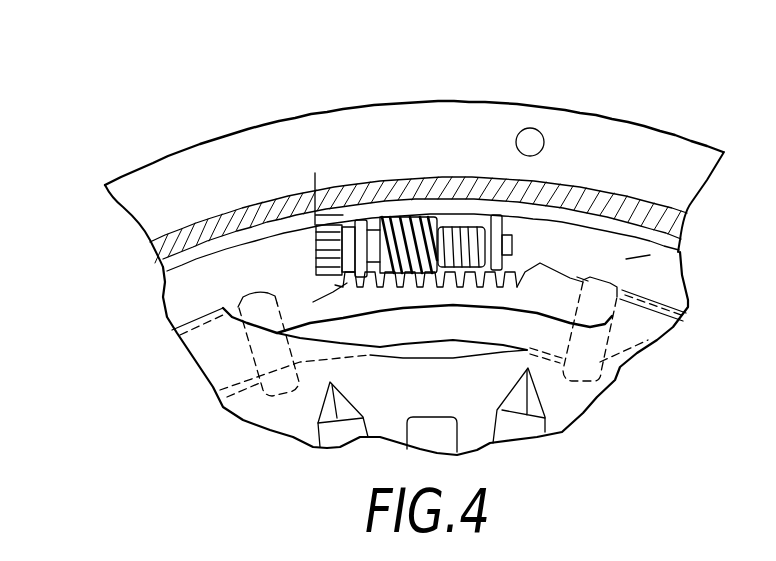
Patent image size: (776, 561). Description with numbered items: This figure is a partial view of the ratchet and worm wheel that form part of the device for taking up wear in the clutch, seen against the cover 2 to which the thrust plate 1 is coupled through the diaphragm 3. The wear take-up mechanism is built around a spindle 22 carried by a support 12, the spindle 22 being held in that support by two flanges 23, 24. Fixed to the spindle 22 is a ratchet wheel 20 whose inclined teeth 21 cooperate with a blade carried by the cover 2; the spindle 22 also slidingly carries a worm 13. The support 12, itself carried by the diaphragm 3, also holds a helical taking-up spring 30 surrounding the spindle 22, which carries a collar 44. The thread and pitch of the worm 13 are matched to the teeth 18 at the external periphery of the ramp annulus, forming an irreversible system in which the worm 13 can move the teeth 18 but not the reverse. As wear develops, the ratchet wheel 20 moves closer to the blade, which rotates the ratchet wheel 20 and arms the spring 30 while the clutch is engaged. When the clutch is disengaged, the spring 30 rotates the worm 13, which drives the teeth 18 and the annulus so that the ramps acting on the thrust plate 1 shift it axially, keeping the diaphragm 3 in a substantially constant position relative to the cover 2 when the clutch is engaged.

The thrust plate 1 is at (626, 259).
The cover 2 is at (668, 120).
The diaphragm 3 is at (676, 291).
The support 12 is at (198, 355).
The worm 13 is at (422, 205).
The teeth 18 is at (577, 277).
The ratchet wheel 20 is at (305, 246).
The inclined teeth 21 is at (330, 280).
The spindle 22 is at (512, 243).
The flange 23 is at (345, 225).
The flange 24 is at (496, 215).
The spring 30 is at (473, 227).
The collar 44 is at (372, 238).